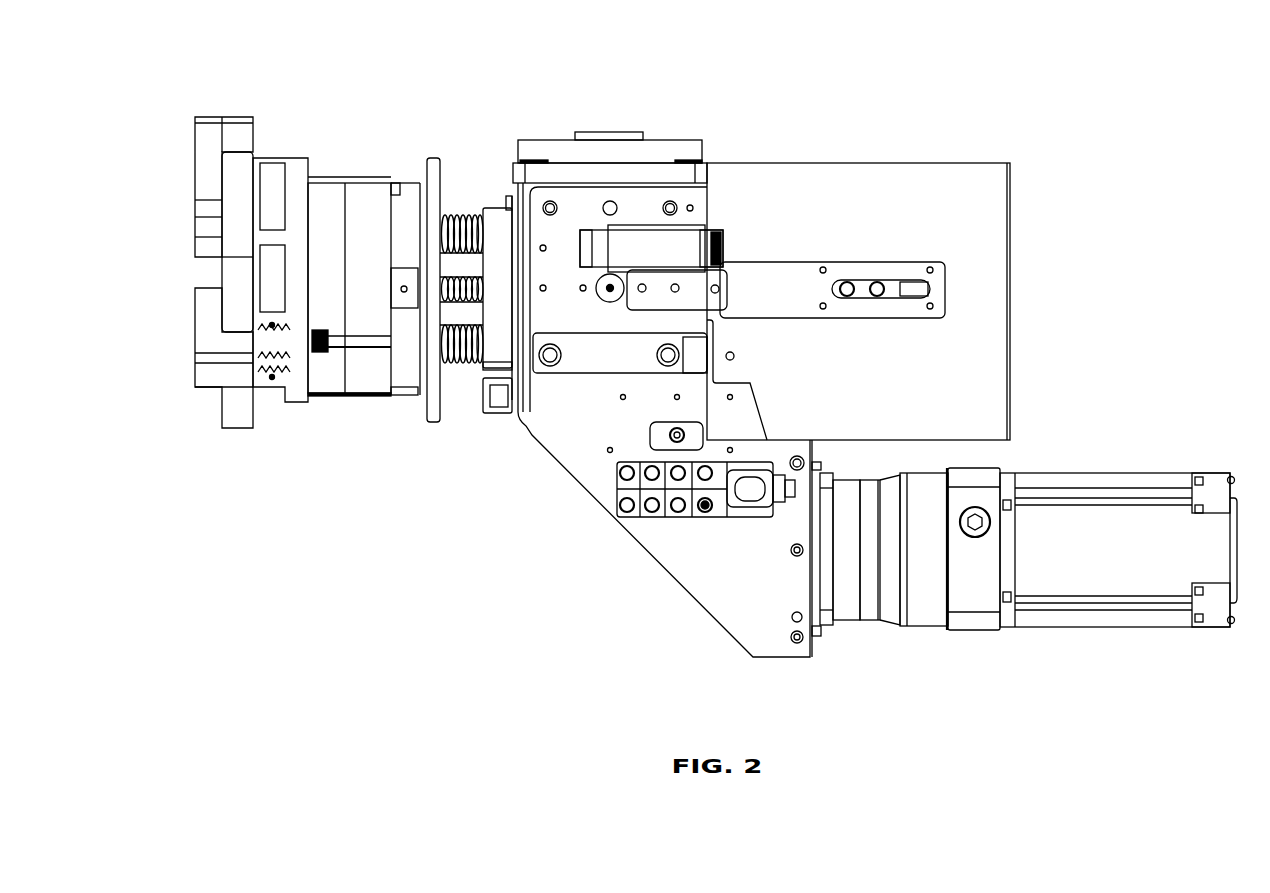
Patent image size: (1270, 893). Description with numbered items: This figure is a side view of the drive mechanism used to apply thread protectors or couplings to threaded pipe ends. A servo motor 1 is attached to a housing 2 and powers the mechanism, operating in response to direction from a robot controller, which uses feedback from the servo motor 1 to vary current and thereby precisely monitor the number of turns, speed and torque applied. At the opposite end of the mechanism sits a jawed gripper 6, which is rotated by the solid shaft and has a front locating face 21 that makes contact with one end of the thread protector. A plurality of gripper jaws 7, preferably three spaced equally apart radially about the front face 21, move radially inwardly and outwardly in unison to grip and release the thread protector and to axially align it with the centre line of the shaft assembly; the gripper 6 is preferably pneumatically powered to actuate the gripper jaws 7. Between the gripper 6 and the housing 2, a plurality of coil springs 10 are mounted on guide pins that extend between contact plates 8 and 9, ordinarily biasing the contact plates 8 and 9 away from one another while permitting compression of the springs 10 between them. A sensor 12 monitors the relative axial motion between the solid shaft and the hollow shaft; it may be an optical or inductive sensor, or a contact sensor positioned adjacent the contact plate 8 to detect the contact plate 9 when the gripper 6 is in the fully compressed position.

The servo motor 1 is at (1157, 482).
The housing 2 is at (995, 250).
The jawed gripper 6 is at (292, 192).
The gripper jaws 7 is at (208, 137).
The contact plate 8 is at (488, 367).
The contact plate 9 is at (433, 165).
The coil springs 10 is at (457, 218).
The sensor 12 is at (498, 413).
The front locating face 21 is at (222, 275).